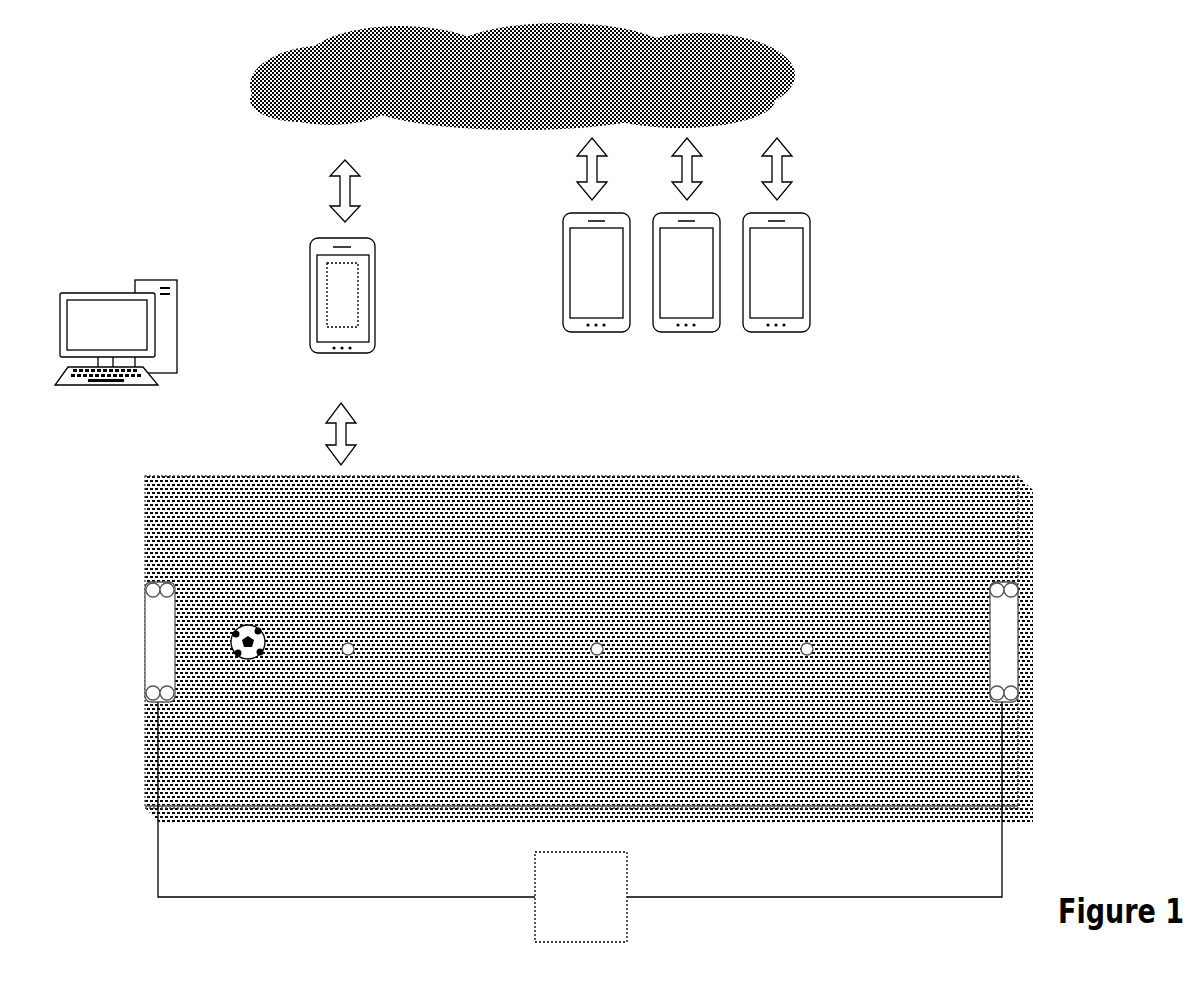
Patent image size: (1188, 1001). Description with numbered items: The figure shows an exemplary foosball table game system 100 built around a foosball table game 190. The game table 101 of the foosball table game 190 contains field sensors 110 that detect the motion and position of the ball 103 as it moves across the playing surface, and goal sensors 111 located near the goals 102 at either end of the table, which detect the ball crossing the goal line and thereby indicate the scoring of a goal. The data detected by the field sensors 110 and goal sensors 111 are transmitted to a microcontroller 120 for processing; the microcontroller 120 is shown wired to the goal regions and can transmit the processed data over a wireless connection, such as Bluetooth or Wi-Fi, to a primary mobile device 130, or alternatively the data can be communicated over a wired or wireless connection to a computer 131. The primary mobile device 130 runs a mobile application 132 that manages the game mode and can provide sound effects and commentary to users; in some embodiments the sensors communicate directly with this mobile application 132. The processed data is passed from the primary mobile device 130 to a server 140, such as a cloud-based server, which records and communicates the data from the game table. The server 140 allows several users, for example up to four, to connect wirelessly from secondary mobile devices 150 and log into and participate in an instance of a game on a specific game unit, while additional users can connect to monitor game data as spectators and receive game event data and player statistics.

The foosball table game system 100 is at (1017, 244).
The game table 101 is at (589, 649).
The goals 102 is at (582, 642).
The ball 103 is at (271, 642).
The field sensors 110 is at (578, 636).
The goal sensors 111 is at (132, 600).
The microcontroller 120 is at (580, 822).
The primary mobile device 130 is at (325, 295).
The computer 131 is at (116, 332).
The mobile application 132 is at (342, 295).
The server 140 is at (522, 76).
The secondary mobile devices 150 is at (686, 272).
The foosball table game 190 is at (582, 475).